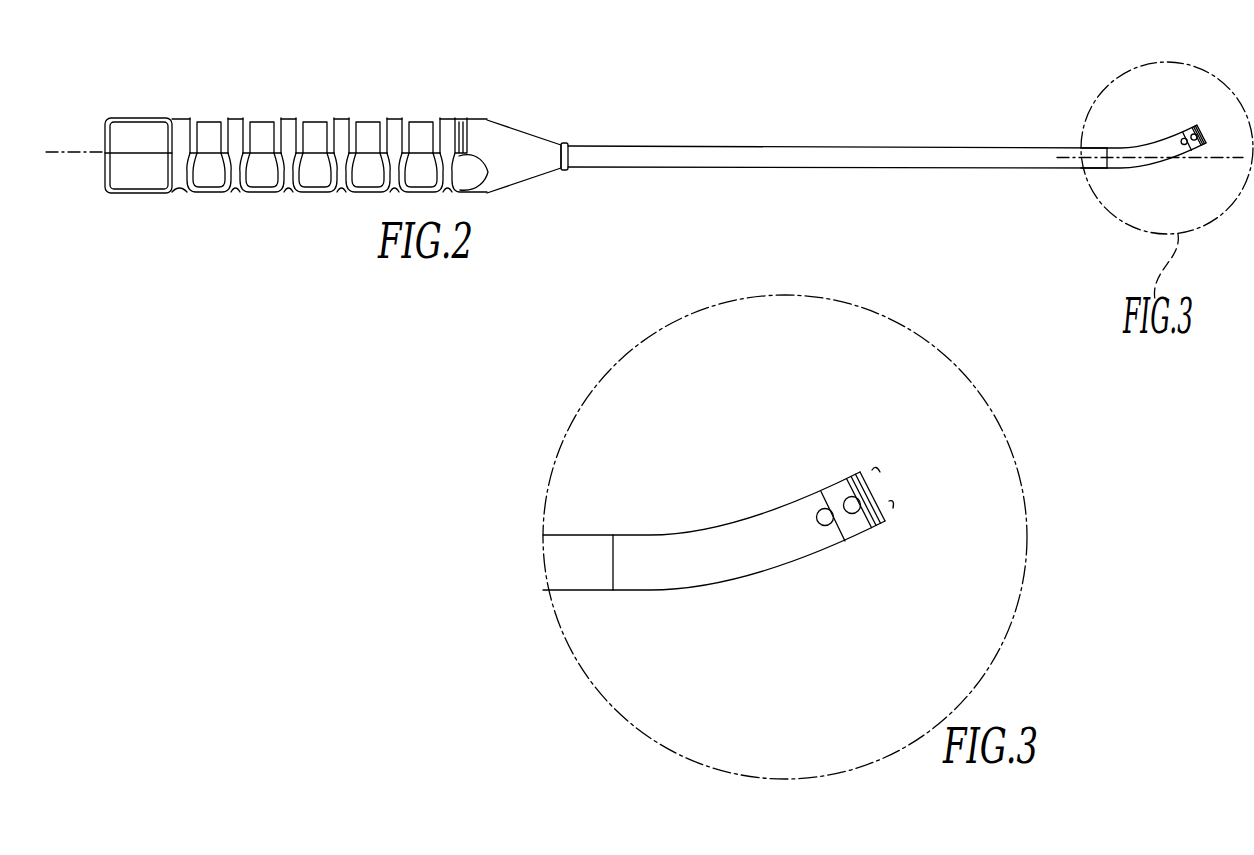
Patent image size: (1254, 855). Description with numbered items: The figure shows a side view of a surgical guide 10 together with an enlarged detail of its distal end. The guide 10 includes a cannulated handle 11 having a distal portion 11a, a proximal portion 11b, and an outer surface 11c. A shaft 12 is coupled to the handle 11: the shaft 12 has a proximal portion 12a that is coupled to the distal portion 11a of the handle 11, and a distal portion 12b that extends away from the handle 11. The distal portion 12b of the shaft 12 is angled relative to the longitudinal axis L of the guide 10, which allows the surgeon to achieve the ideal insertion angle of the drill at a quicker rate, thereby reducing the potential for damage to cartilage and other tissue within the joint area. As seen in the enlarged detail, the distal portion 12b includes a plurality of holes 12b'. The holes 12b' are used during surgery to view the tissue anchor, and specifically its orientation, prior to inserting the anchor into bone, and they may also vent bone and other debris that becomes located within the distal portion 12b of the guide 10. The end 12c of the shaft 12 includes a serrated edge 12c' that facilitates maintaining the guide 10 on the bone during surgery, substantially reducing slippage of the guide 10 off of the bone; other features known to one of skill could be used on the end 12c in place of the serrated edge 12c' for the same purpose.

In FIG. 2, the guide 10 is at (615, 84).
In FIG. 2, the cannulated handle 11 is at (336, 148).
In FIG. 2, the distal portion of handle 11a is at (490, 136).
In FIG. 2, the proximal portion of handle 11b is at (148, 130).
In FIG. 2, the outer surface of handle 11c is at (262, 177).
In FIG. 2, the shaft 12 is at (887, 146).
In FIG. 2, the proximal portion of shaft 12a is at (578, 160).
In FIG. 2, the distal portion of shaft 12b is at (1143, 134).
In FIG. 3, the distal portion of shaft 12b is at (747, 497).
In FIG. 2, the hole 12b' is at (1164, 165).
In FIG. 3, the hole 12b' is at (847, 544).
In FIG. 2, the end of shaft 12c is at (1188, 108).
In FIG. 3, the end of shaft 12c is at (899, 466).
In FIG. 3, the serrated edge 12c' is at (911, 474).
In FIG. 2, the longitudinal axis L is at (82, 154).